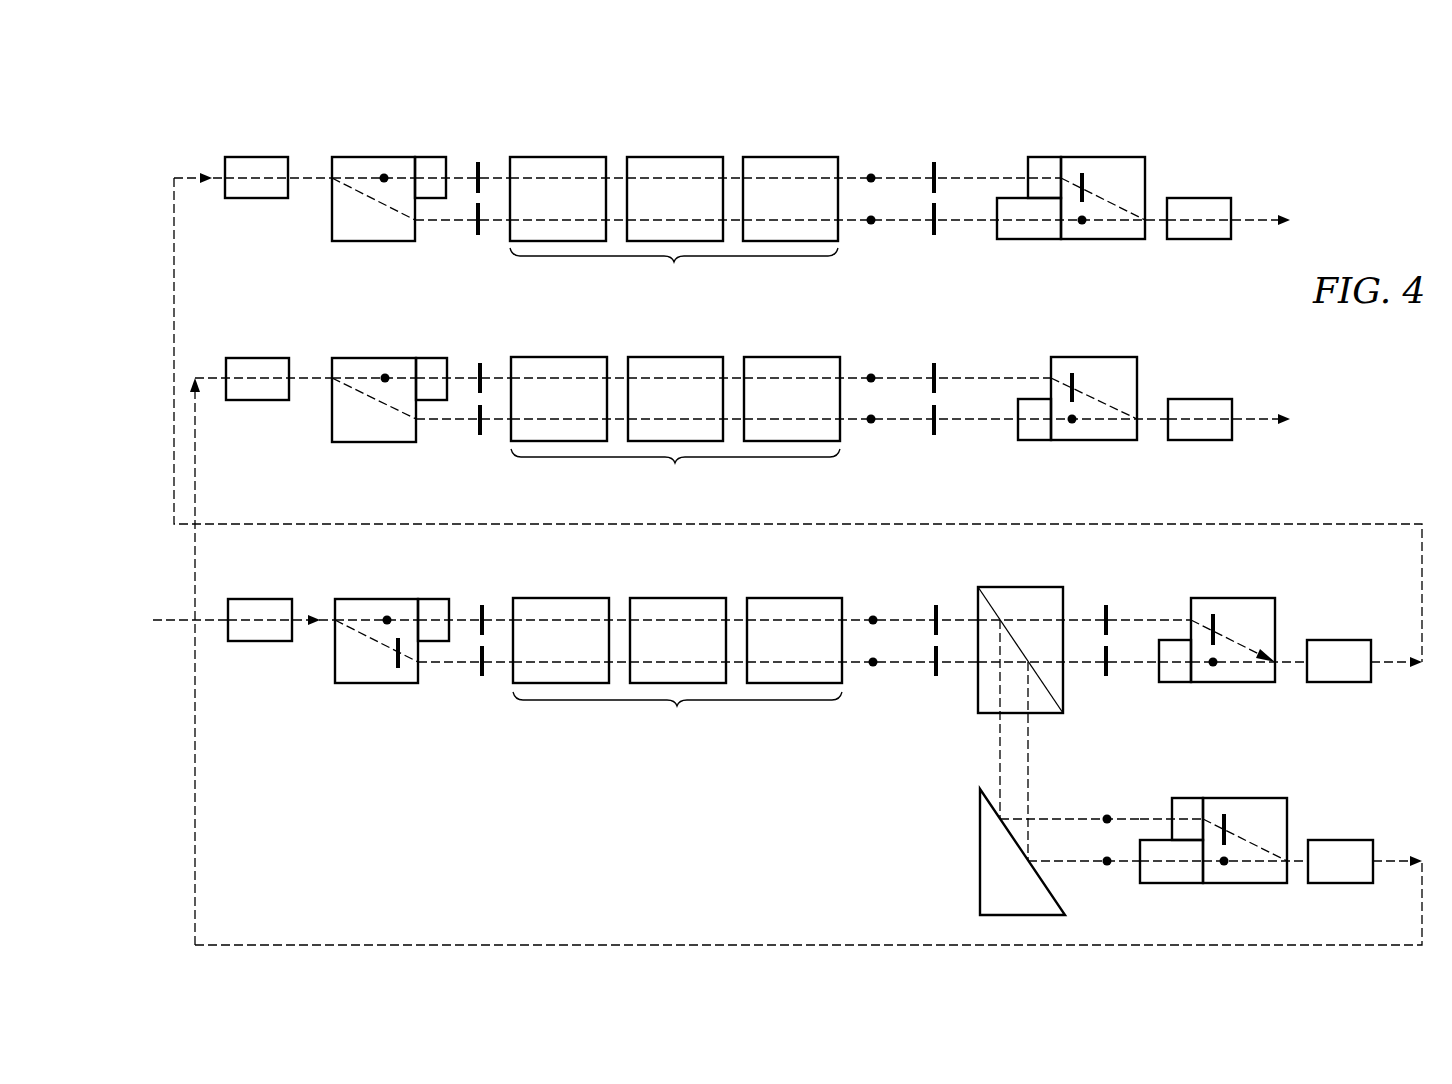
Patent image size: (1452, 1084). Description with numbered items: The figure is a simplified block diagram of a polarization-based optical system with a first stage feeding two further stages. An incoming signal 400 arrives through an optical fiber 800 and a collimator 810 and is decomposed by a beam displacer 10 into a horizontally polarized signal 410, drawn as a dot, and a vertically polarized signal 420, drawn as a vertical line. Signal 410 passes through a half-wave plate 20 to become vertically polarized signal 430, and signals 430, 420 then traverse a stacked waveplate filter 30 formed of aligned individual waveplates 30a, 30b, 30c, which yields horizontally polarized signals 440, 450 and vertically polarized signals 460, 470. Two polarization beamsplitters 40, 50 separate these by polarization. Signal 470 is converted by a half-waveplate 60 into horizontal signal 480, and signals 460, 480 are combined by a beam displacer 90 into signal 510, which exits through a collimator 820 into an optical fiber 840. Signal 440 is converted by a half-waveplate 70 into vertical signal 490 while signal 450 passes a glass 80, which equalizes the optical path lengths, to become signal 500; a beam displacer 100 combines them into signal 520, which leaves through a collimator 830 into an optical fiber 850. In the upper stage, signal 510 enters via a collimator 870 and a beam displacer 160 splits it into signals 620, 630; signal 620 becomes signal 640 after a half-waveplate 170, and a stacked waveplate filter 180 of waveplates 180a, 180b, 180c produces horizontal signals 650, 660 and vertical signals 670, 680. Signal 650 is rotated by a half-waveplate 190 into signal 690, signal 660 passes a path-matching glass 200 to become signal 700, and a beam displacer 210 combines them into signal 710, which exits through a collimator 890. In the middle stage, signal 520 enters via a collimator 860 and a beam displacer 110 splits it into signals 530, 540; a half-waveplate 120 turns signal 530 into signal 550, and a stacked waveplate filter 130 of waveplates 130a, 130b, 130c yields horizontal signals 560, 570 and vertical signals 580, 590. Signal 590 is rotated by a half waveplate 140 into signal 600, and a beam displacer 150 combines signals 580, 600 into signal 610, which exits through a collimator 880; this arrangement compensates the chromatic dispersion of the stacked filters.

The beam displacer 10 is at (350, 683).
The half-wave plate 20 is at (435, 606).
The stacked waveplate filter 30 is at (677, 712).
The individual waveplate 30a is at (560, 598).
The individual waveplate 30b is at (676, 598).
The individual waveplate 30c is at (790, 598).
The polarization beamsplitter 40 is at (1020, 587).
The polarization beamsplitter 50 is at (980, 850).
The half-waveplate 60 is at (1173, 683).
The half-waveplate 70 is at (1182, 798).
The glass 80 is at (1160, 883).
The beam displacer 90 is at (1232, 599).
The beam displacer 100 is at (1268, 883).
The beam displacer 110 is at (373, 442).
The half-waveplate 120 is at (433, 364).
The stacked waveplate filter 130 is at (675, 469).
The individual waveplate 130a is at (559, 357).
The individual waveplate 130b is at (675, 357).
The individual waveplate 130c is at (790, 357).
The half waveplate 140 is at (1030, 440).
The beam displacer 150 is at (1093, 357).
The beam displacer 160 is at (373, 241).
The half-waveplate 170 is at (432, 164).
The stacked waveplate filter 180 is at (674, 268).
The individual waveplate 180a is at (559, 157).
The individual waveplate 180b is at (673, 157).
The individual waveplate 180c is at (790, 157).
The half-waveplate 190 is at (1038, 163).
The glass 200 is at (1020, 239).
The beam displacer 210 is at (1124, 239).
The incoming signal 400 is at (166, 620).
The signal with horizontal polarization 410 is at (387, 616).
The signal with vertical polarization 420 is at (400, 668).
The signal 430 is at (482, 605).
The signal 440 is at (873, 616).
The signal 450 is at (873, 666).
The signal 460 is at (936, 605).
The signal 470 is at (936, 676).
The signal 480 is at (1213, 666).
The signal 490 is at (1224, 814).
The signal 500 is at (1224, 865).
The signal 510 is at (1393, 666).
The signal 520 is at (1393, 861).
The signal 530 is at (385, 374).
The signal 540 is at (480, 435).
The signal 550 is at (480, 363).
The signal 560 is at (871, 374).
The signal 570 is at (871, 423).
The signal 580 is at (934, 366).
The signal 590 is at (934, 435).
The signal 600 is at (1072, 423).
The signal 610 is at (1229, 396).
The signal 620 is at (384, 174).
The signal 630 is at (478, 235).
The signal 640 is at (478, 162).
The signal 650 is at (871, 174).
The signal 660 is at (871, 224).
The signal 670 is at (934, 162).
The signal 680 is at (934, 235).
The signal 690 is at (1082, 173).
The signal 700 is at (1082, 224).
The signal 710 is at (1229, 196).
The optical fiber 800 is at (176, 622).
The collimator 810 is at (258, 641).
The collimator 820 is at (1340, 640).
The collimator 830 is at (1340, 840).
The optical fiber 840 is at (1340, 524).
The optical fiber 850 is at (676, 945).
The collimator 860 is at (258, 358).
The collimator 870 is at (258, 157).
The collimator 880 is at (1199, 399).
The collimator 890 is at (1199, 198).